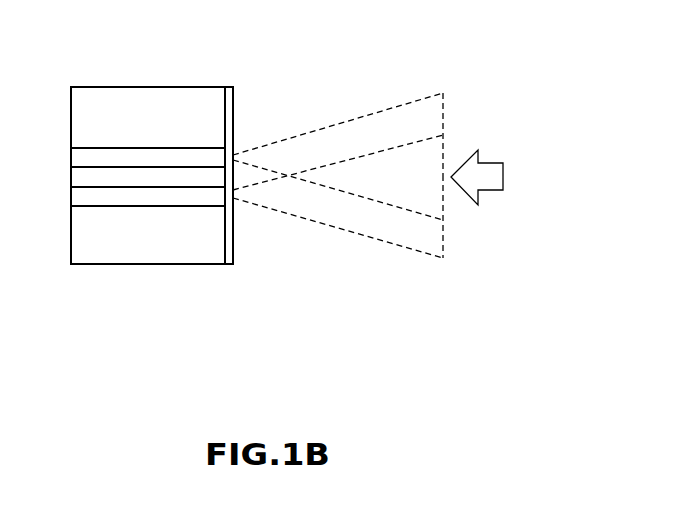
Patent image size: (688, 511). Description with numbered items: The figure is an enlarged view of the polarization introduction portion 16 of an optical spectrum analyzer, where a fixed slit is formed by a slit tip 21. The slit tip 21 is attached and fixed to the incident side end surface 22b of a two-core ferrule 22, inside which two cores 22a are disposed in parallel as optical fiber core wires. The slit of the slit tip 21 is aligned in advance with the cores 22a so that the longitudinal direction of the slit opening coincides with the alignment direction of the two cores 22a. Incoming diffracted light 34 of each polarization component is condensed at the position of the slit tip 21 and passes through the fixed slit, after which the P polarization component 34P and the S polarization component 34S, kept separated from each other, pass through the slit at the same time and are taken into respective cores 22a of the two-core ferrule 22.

The polarization introduction portion 16 is at (181, 361).
The slit tip 21 is at (203, 85).
The 2-core ferrule 22 is at (110, 258).
The core 22a is at (132, 197).
The incident side end surface 22b is at (223, 243).
The diffracted light 34 is at (492, 190).
The P polarization component 34P is at (380, 113).
The S polarization component 34S is at (380, 239).